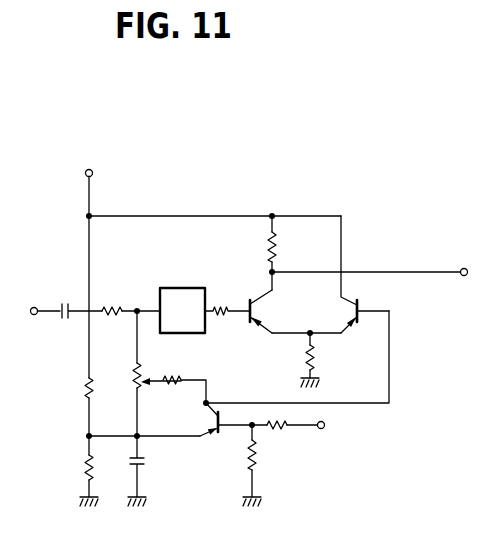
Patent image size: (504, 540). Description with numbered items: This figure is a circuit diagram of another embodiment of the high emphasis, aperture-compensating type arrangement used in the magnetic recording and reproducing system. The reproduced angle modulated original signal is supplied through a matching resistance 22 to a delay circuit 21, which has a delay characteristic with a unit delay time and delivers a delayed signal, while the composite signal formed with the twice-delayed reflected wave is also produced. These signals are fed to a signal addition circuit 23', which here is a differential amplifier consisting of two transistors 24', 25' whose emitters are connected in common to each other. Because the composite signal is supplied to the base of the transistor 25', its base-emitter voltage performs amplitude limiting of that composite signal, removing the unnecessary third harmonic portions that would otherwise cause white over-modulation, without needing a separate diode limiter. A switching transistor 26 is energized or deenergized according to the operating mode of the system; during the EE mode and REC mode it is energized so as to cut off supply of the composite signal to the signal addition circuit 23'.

The delay circuit 21 is at (178, 288).
The matching resistance 22 is at (113, 316).
The signal addition circuit 23' is at (298, 297).
The transistor 24' is at (251, 334).
The transistor 25' is at (362, 297).
The switching transistor 26 is at (213, 437).